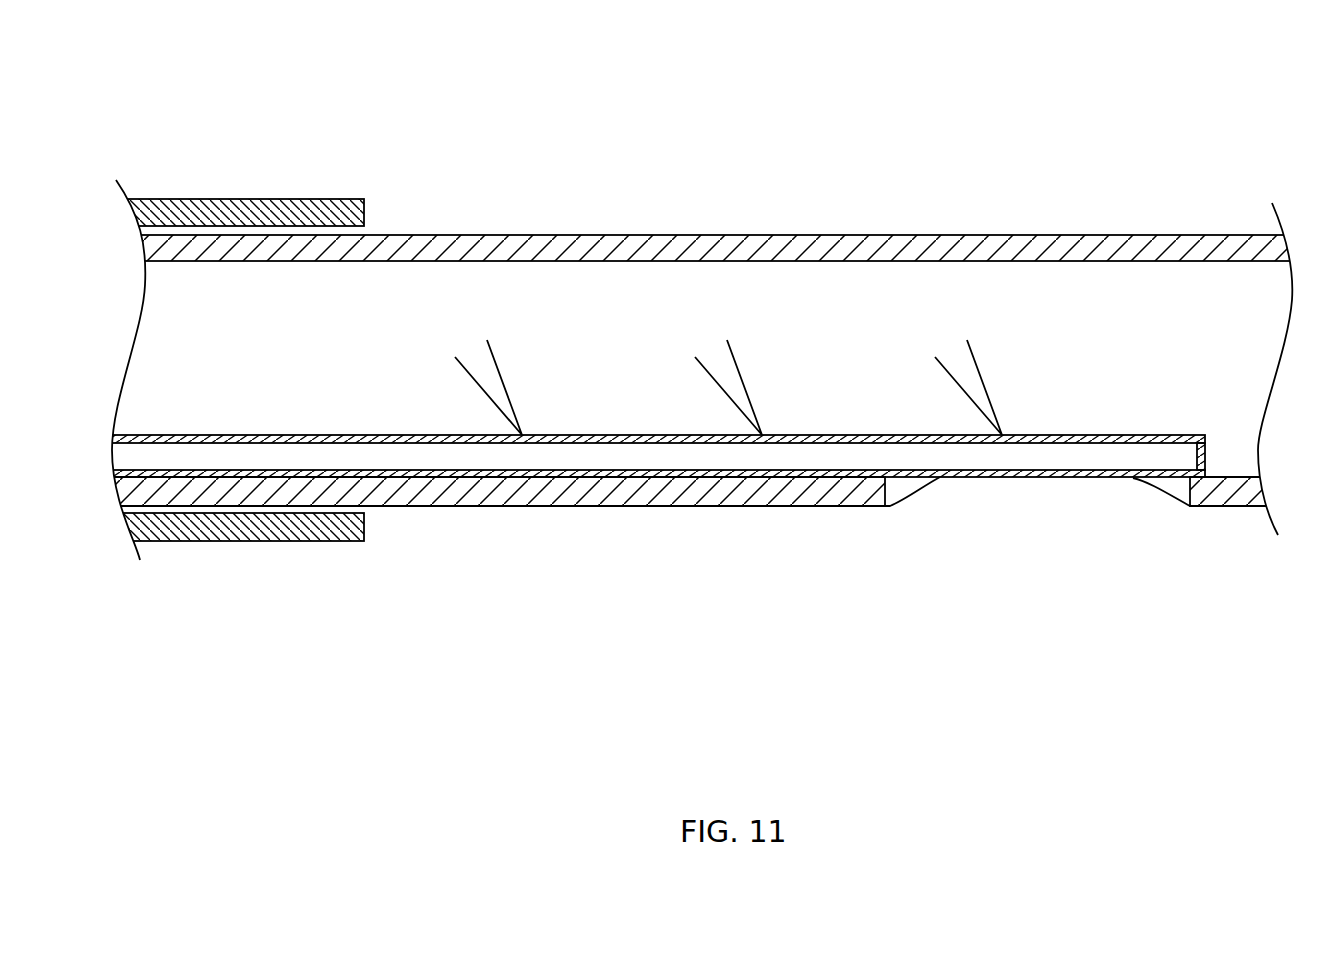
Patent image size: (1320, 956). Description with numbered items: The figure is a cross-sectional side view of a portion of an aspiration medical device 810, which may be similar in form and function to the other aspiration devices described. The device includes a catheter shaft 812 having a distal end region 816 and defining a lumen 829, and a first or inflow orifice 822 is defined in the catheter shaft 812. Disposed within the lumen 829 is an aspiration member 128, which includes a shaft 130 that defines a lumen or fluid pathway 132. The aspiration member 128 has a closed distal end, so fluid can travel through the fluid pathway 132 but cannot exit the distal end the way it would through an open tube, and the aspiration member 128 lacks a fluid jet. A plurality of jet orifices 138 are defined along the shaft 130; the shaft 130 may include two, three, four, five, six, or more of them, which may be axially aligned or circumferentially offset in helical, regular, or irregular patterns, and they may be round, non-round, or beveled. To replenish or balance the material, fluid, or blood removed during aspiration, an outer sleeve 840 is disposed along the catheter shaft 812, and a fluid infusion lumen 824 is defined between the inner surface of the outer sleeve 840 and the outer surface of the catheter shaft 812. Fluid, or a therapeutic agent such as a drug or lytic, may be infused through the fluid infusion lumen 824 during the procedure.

The aspiration medical device 810 is at (836, 92).
The catheter shaft 812 is at (418, 228).
The distal end region 816 is at (710, 235).
The fluid infusion lumen 824 is at (307, 230).
The lumen 829 is at (597, 285).
The outer sleeve 840 is at (267, 528).
The aspiration member 128 is at (305, 432).
The shaft 130 is at (480, 473).
The fluid pathway 132 is at (715, 455).
The jet orifices 138 is at (524, 437).
The inflow orifice 822 is at (1043, 493).